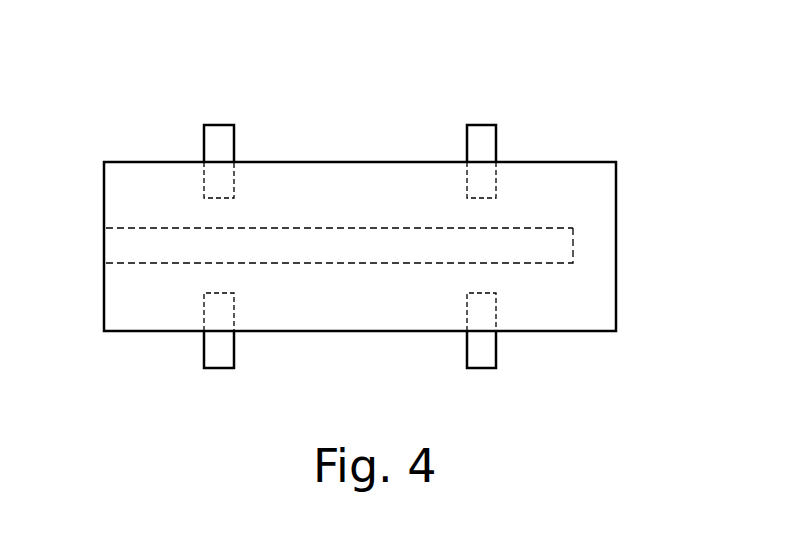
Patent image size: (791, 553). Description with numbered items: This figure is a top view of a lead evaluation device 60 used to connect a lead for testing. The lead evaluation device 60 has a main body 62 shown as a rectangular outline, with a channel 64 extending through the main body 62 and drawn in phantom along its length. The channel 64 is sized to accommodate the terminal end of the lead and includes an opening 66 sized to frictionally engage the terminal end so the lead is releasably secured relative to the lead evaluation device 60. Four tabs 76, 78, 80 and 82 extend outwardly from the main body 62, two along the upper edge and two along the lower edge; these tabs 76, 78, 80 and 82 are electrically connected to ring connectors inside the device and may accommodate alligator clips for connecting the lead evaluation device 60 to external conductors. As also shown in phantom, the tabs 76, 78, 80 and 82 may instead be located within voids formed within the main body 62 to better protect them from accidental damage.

The lead evaluation device 60 is at (487, 91).
The main body 62 is at (616, 183).
The channel 64 is at (133, 263).
The opening 66 is at (112, 243).
The tab 76 is at (230, 138).
The tab 78 is at (230, 352).
The tab 80 is at (490, 135).
The tab 82 is at (490, 352).